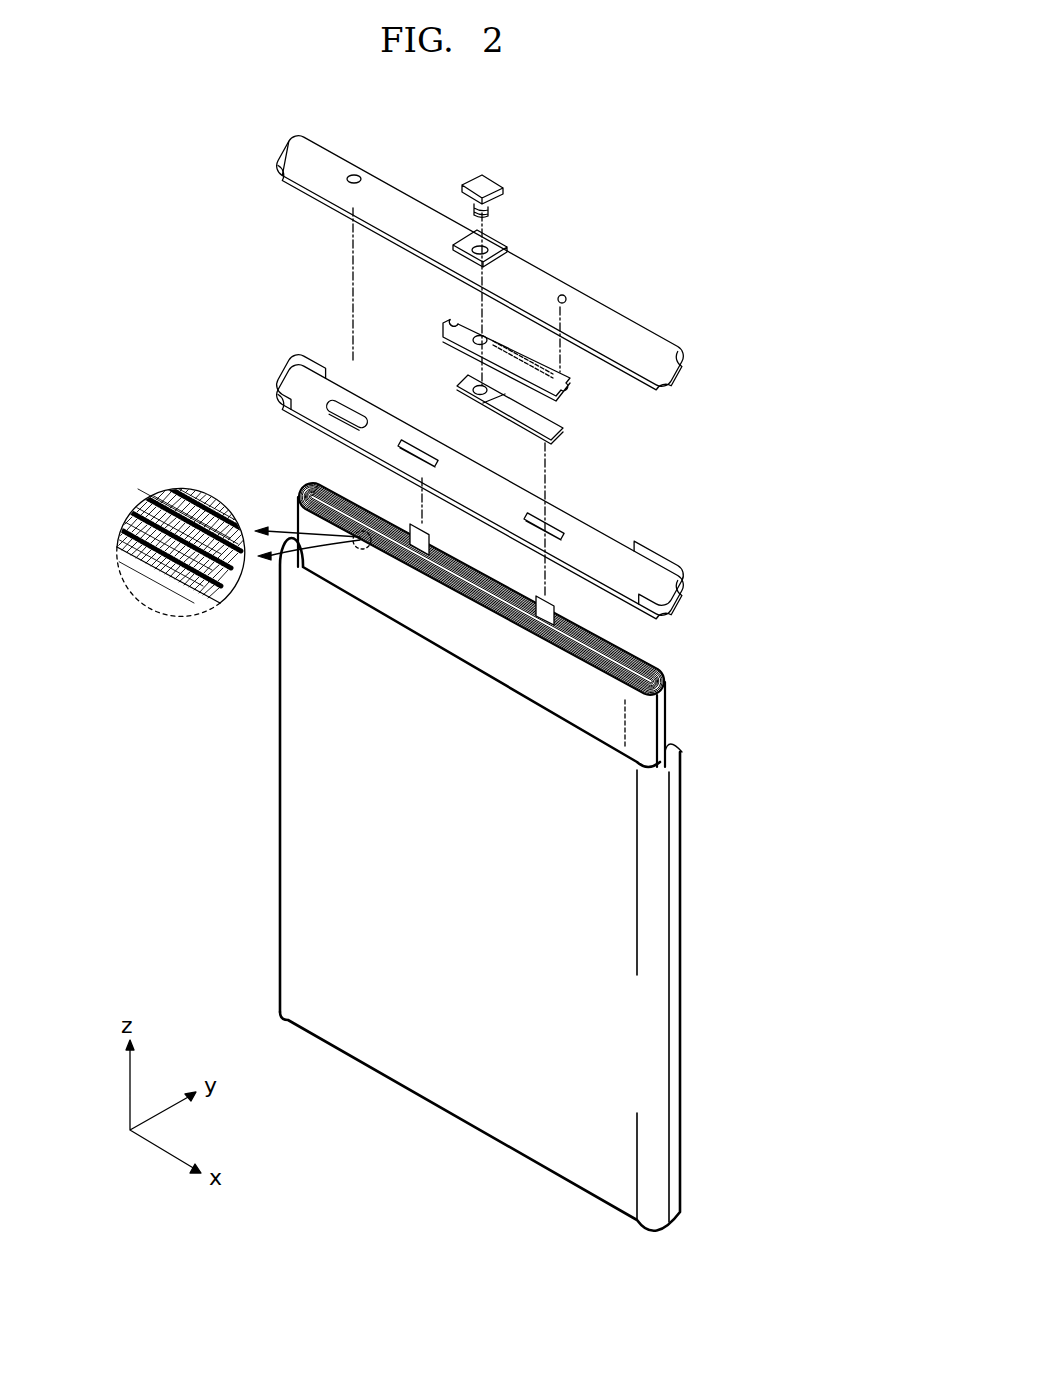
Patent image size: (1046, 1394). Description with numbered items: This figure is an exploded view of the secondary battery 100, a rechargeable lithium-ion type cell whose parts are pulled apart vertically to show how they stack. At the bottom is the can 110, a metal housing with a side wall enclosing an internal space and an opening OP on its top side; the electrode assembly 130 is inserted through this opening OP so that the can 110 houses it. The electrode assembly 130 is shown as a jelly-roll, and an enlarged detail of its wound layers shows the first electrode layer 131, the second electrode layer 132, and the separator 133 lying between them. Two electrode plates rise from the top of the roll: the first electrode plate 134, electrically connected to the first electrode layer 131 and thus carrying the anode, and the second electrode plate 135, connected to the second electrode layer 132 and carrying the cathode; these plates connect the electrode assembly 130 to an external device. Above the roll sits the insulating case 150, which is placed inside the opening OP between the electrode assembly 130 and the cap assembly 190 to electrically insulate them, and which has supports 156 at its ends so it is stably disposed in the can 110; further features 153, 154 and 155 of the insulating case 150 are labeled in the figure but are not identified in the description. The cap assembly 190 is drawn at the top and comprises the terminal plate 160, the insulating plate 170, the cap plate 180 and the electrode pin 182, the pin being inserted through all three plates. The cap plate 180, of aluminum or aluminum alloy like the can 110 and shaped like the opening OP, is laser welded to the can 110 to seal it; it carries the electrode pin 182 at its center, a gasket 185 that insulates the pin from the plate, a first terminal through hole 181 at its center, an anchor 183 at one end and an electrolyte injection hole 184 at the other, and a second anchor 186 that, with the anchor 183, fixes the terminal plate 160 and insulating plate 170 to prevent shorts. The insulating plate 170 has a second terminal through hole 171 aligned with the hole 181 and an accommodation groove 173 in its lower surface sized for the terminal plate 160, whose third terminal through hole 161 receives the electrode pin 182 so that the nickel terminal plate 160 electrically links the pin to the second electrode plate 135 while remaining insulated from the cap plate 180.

The secondary battery 100 is at (700, 133).
The can 110 is at (458, 884).
The electrode assembly 130 is at (520, 625).
The first electrode layer 131 is at (194, 542).
The second electrode layer 132 is at (132, 548).
The separator 133 is at (207, 598).
The first electrode plate 134 is at (431, 543).
The second electrode plate 135 is at (555, 612).
The insulating case 150 is at (488, 507).
The first tab hole 153 is at (430, 458).
The second tab hole 154 is at (571, 522).
The slot 155 is at (347, 403).
The supports 156 is at (285, 390).
The terminal plate 160 is at (603, 418).
The third terminal through hole 161 is at (460, 388).
The insulating plate 170 is at (574, 355).
The second terminal through hole 171 is at (470, 350).
The accommodation groove 173 is at (445, 326).
The cap plate 180 is at (650, 344).
The first terminal through hole 181 is at (502, 248).
The electrode pin 182 is at (502, 193).
The first anchor 183 is at (565, 297).
The electrolyte injection hole 184 is at (354, 174).
The gasket 185 is at (498, 213).
The second anchor 186 is at (321, 188).
The cap assembly 190 is at (792, 232).
The opening op is at (670, 752).